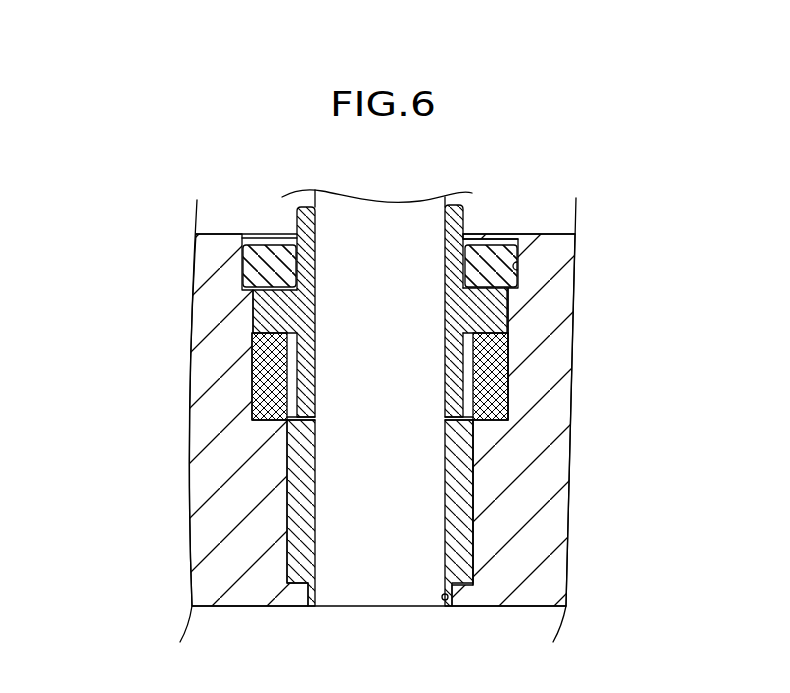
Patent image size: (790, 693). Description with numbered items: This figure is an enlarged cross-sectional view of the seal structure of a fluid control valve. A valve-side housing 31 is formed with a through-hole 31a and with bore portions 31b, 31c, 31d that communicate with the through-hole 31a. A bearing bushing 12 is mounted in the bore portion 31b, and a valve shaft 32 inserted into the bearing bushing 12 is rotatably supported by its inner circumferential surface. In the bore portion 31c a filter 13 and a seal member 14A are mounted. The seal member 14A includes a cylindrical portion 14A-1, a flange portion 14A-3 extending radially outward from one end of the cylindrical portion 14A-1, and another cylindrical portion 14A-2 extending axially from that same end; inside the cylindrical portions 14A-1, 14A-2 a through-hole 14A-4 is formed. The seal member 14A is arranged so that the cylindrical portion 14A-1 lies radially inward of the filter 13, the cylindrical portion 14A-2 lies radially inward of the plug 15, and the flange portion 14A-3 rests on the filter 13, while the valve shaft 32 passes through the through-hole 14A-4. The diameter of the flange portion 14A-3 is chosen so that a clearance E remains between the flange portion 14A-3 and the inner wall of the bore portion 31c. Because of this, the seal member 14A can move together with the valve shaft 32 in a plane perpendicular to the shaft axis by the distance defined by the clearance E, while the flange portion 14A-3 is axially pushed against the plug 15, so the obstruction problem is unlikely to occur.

The seal member 14A is at (371, 287).
The cylindrical portion 14A-1 is at (449, 354).
The cylindrical portion 14A-2 is at (469, 258).
The flange portion 14A-3 is at (261, 309).
The through-hole 14A-4 is at (444, 380).
The plug 15 is at (247, 258).
The filter 13 is at (263, 372).
The bearing bushing 12 is at (297, 502).
The valve shaft 32 is at (430, 219).
The valve-side housing 31 is at (548, 462).
The through-hole 31a is at (450, 594).
The bore portion 31b is at (468, 528).
The bore portion 31c is at (504, 393).
The bore portion 31d is at (518, 266).
The clearance E is at (509, 300).